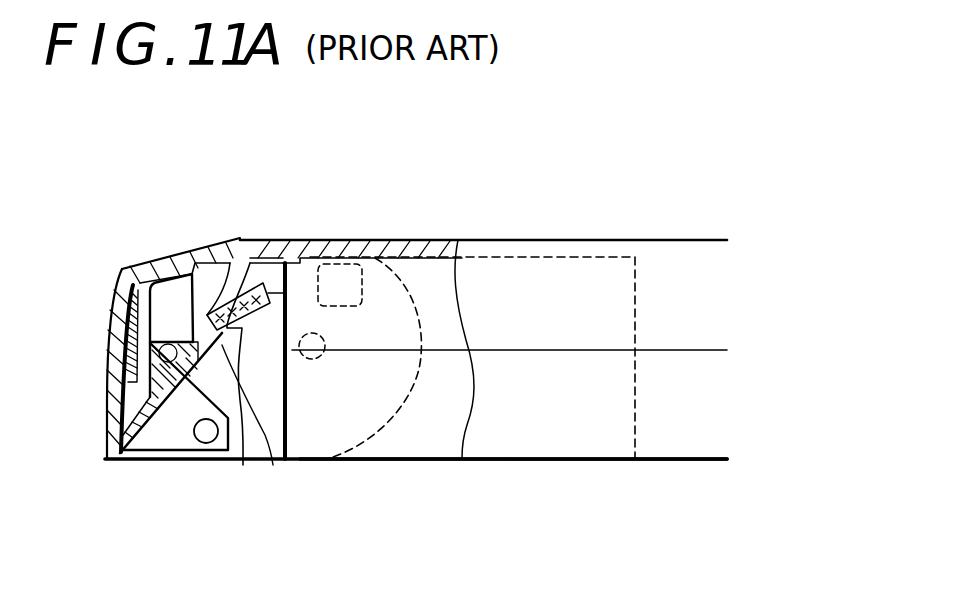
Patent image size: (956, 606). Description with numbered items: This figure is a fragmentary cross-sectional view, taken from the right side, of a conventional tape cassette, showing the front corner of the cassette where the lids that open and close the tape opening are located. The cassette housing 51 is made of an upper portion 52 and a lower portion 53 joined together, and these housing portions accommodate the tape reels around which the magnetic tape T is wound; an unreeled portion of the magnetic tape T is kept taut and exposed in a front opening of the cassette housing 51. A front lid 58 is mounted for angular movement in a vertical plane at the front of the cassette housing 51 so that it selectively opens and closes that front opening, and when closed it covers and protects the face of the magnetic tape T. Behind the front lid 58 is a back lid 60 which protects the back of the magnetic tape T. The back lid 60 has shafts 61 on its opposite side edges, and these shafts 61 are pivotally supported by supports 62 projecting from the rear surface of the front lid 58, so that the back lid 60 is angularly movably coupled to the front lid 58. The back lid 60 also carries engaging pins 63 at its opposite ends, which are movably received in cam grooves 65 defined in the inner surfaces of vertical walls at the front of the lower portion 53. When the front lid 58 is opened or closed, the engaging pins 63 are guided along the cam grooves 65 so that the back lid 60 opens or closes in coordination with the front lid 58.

The cassette housing 51 is at (590, 242).
The upper portion 52 is at (505, 290).
The lower portion 53 is at (531, 450).
The front lid 58 is at (114, 353).
The back lid 60 is at (243, 465).
The shafts 61 is at (160, 374).
The supports 62 is at (172, 302).
The engaging pins 63 is at (195, 415).
The cam grooves 65 is at (273, 465).
The magnetic tape T is at (130, 330).